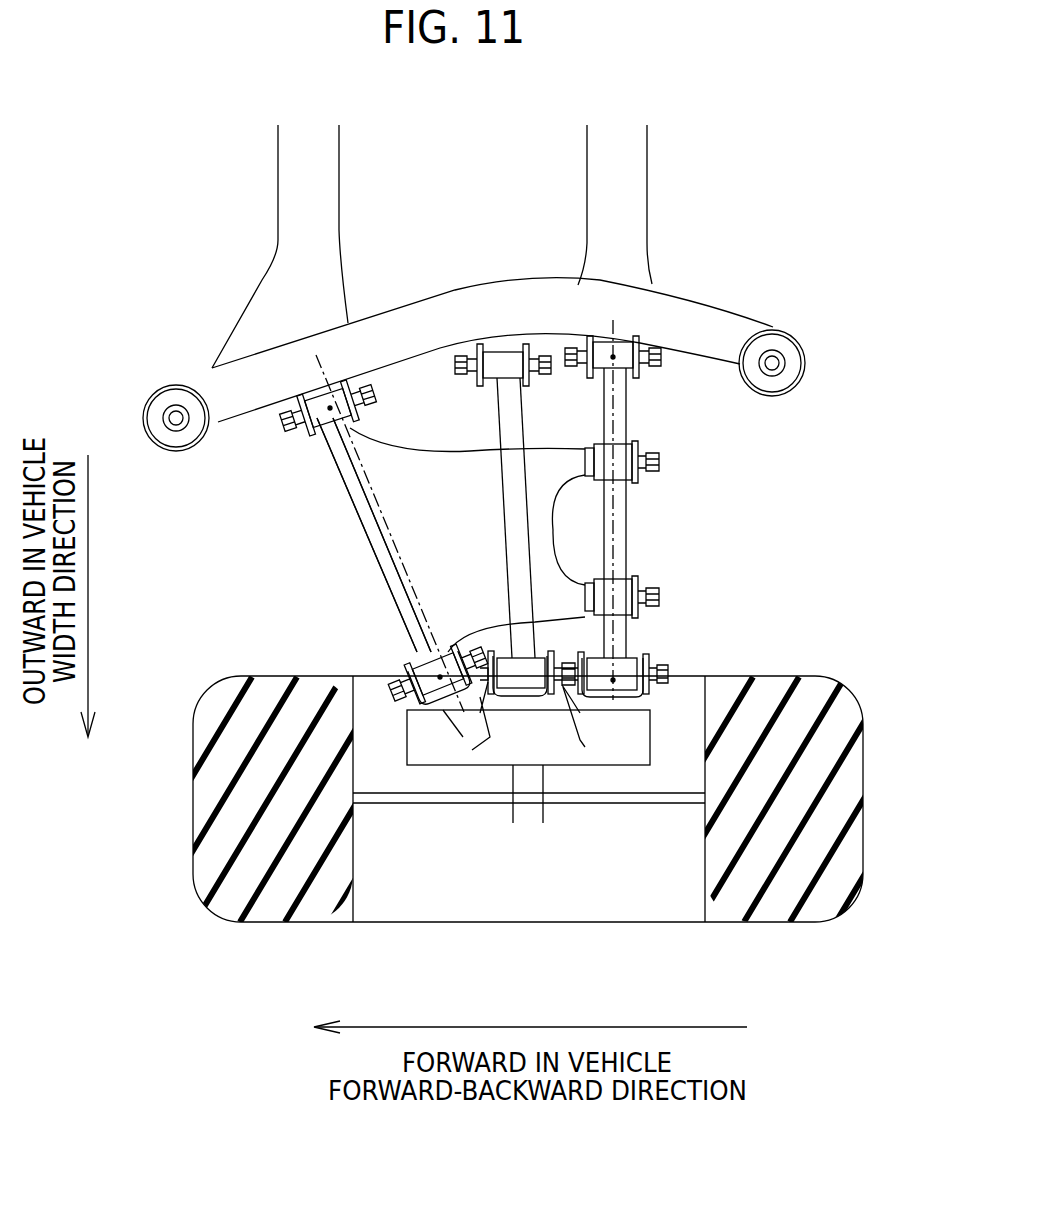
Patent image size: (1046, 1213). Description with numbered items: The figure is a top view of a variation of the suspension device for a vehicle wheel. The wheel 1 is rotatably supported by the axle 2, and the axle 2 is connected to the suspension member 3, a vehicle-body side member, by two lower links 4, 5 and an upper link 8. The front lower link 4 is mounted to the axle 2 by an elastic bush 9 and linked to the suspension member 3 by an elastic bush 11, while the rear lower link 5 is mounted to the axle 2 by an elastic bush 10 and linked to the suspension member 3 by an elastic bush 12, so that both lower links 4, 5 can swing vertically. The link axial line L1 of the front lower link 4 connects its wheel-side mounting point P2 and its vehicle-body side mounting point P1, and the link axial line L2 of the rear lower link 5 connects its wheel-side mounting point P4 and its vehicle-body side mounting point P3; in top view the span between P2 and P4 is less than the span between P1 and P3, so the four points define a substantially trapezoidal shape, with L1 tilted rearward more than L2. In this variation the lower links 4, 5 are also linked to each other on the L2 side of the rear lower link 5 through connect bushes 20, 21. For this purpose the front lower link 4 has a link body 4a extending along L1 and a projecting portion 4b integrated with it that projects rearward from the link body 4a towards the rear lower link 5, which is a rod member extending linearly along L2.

The wheel 1 is at (850, 832).
The axle 2 is at (613, 755).
The suspension member 3 is at (493, 305).
The lower link 4 is at (283, 540).
The link body 4a is at (372, 533).
The projecting portion 4b is at (452, 548).
The lower link 5 is at (624, 495).
The upper link 8 is at (508, 427).
The elastic bush 9 is at (433, 690).
The elastic bush 10 is at (635, 662).
The elastic bush 11 is at (312, 432).
The elastic bush 12 is at (602, 370).
The connect bush 20 is at (632, 585).
The connect bush 21 is at (632, 450).
The vehicle-body side mounting point P1 is at (332, 410).
The wheel-side mounting point P2 is at (438, 674).
The vehicle-body side mounting point P3 is at (615, 359).
The wheel-side mounting point P4 is at (615, 682).
The link axial line L1 is at (360, 487).
The link axial line L2 is at (617, 533).